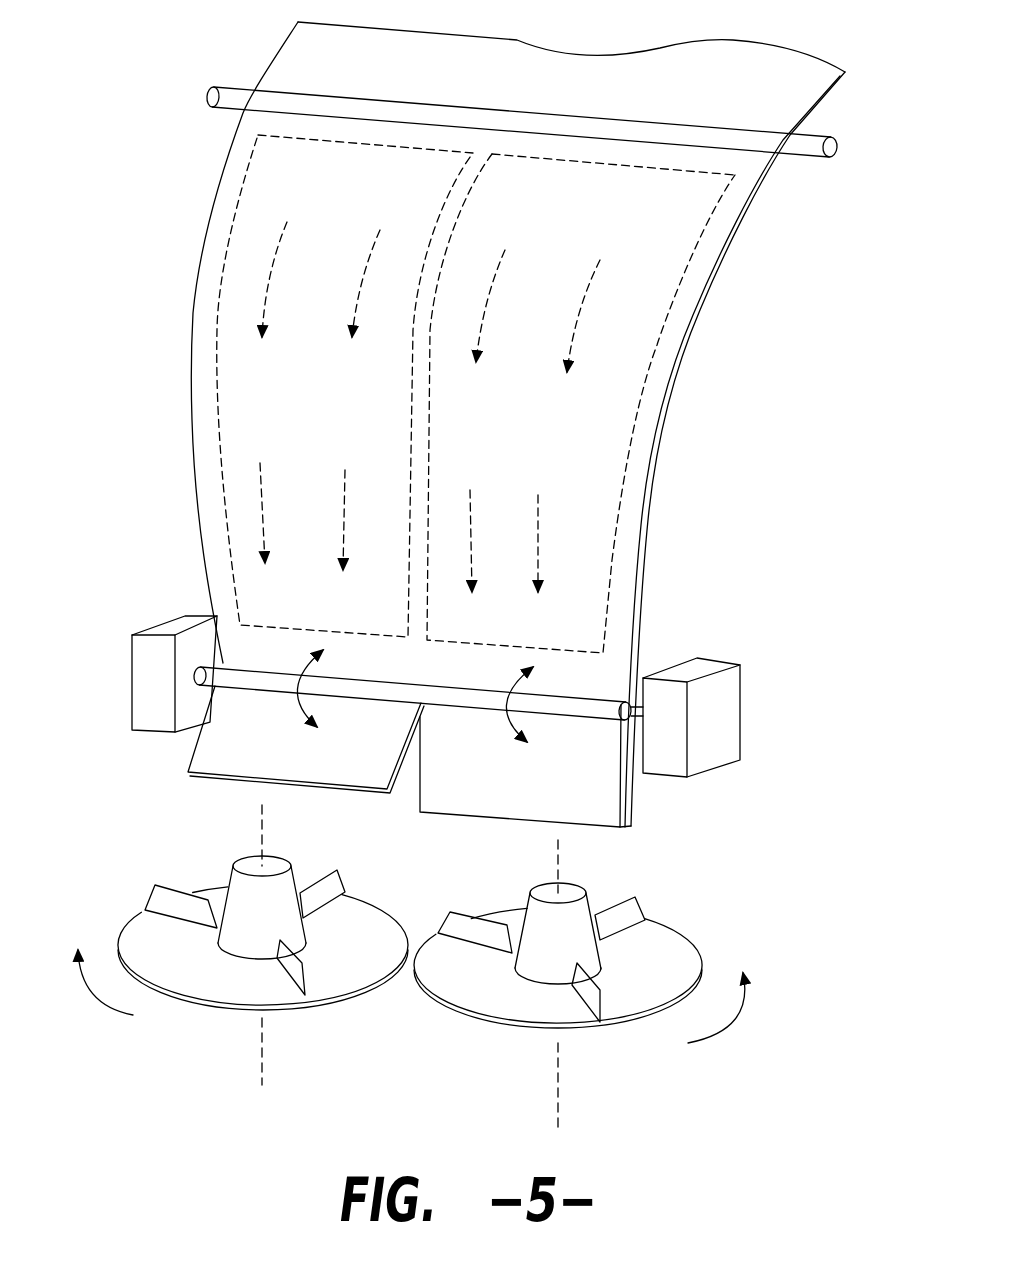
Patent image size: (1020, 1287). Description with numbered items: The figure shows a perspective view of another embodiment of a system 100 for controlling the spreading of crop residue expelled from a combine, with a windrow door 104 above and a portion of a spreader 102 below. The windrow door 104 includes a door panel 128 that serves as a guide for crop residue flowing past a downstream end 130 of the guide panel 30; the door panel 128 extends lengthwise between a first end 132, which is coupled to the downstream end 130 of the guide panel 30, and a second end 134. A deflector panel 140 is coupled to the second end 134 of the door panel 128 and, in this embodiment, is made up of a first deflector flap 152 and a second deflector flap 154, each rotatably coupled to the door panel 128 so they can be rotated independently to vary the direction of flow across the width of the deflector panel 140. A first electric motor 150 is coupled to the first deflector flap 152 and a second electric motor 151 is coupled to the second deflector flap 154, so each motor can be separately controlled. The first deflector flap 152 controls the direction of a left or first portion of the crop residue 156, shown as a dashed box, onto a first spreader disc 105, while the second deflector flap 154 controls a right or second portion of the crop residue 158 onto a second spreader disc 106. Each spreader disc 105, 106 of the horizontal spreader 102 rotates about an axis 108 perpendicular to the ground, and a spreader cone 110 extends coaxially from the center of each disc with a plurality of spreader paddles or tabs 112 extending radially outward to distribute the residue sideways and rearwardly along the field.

The guide panel 30 is at (570, 45).
The system 100 is at (170, 177).
The spreader 102 is at (97, 828).
The windrow door 104 is at (158, 437).
The first spreader disc 105 is at (218, 978).
The second spreader disc 106 is at (498, 995).
The axis 108 is at (264, 1058).
The spreader cone 110 is at (237, 897).
The spreader paddles or tabs 112 is at (167, 902).
The door panel 128 is at (657, 483).
The downstream end 130 is at (822, 105).
The first end 132 is at (738, 175).
The second end 134 is at (613, 677).
The deflector panel 140 is at (632, 807).
The first electric motor 150 is at (142, 682).
The second electric motor 151 is at (725, 723).
The first deflector flap 152 is at (207, 750).
The second deflector flap 154 is at (590, 807).
The first portion of the crop residue 156 is at (217, 347).
The second portion of the crop residue 158 is at (655, 345).